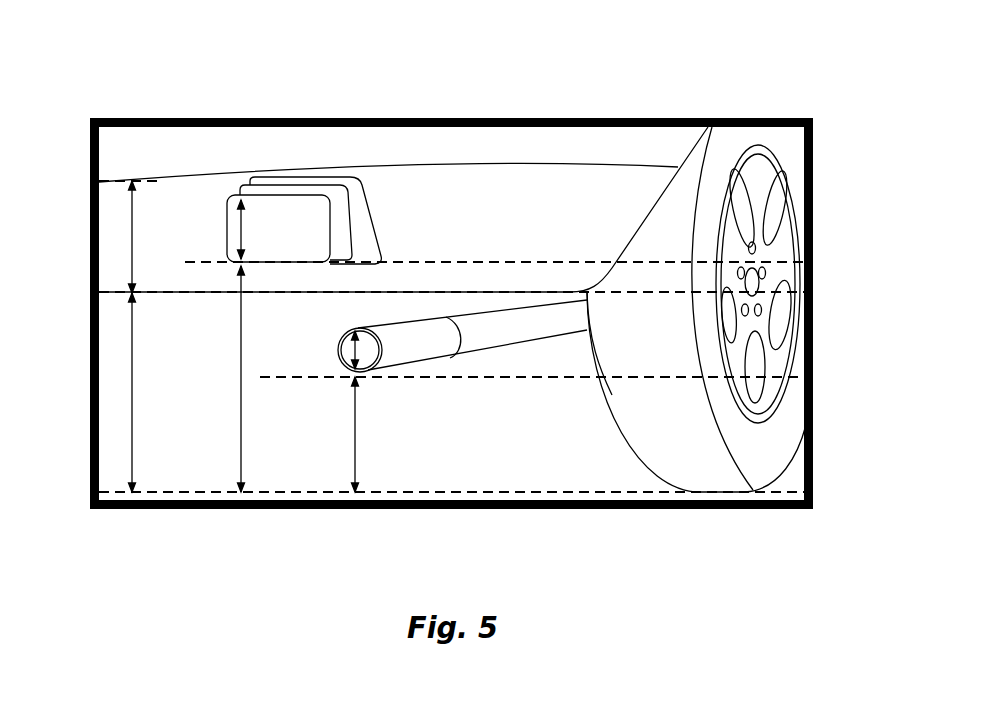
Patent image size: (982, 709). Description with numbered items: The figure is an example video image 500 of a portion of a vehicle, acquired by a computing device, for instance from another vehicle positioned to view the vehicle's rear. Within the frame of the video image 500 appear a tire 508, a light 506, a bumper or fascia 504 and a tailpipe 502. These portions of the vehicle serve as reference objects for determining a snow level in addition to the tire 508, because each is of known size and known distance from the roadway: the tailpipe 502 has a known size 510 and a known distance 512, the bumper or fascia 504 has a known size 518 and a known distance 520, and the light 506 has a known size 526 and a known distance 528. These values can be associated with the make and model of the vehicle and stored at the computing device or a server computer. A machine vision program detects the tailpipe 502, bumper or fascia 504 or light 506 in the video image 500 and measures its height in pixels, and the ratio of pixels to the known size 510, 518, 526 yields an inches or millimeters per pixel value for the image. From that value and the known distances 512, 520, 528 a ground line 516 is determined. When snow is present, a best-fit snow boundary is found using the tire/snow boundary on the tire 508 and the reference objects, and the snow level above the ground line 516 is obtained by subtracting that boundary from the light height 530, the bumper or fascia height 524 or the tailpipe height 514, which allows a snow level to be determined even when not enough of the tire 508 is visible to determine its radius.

The video image 500 is at (475, 54).
The tailpipe 502 is at (403, 367).
The bumper or fascia 504 is at (157, 178).
The light 506 is at (228, 208).
The tire 508 is at (802, 440).
The known size 510 is at (352, 350).
The known distance 512 is at (352, 428).
The tailpipe height 514 is at (612, 380).
The ground line 516 is at (784, 494).
The known size 518 is at (132, 236).
The known distance 520 is at (132, 418).
The bumper or fascia height 524 is at (601, 296).
The known size 526 is at (241, 240).
The known distance 528 is at (241, 397).
The light height 530 is at (535, 262).